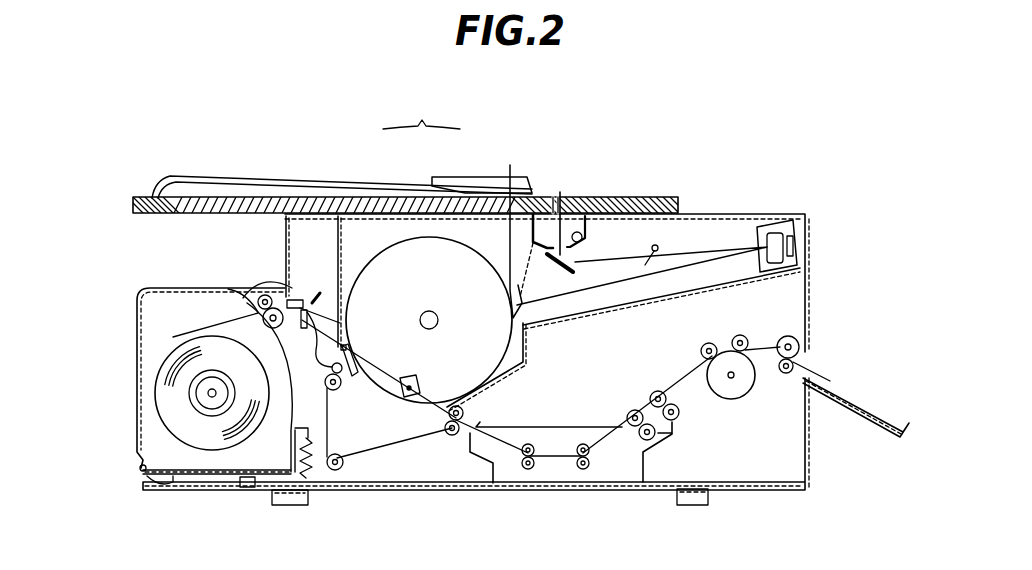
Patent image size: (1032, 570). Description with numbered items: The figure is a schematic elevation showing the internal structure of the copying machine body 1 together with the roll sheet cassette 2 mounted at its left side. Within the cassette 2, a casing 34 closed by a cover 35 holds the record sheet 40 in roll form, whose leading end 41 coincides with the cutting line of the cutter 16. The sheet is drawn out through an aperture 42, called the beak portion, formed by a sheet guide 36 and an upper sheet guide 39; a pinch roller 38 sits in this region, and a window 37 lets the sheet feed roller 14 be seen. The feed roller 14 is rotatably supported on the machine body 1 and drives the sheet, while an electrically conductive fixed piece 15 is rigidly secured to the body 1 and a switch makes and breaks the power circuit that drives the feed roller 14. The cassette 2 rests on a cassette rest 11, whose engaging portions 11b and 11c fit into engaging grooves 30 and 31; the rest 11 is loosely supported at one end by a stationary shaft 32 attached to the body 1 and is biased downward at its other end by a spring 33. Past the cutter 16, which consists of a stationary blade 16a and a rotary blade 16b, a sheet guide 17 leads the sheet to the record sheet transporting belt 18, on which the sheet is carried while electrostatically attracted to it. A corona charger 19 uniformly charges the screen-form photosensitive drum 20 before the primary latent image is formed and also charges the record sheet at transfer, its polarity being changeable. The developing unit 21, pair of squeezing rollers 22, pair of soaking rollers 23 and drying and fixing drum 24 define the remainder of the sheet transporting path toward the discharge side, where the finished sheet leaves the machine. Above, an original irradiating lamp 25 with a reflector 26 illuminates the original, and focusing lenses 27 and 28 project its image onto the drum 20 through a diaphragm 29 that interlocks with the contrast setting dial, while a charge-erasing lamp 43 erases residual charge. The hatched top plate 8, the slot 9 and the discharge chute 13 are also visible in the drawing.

The copying machine body 1 is at (665, 494).
The roll sheet cassette 2 is at (135, 465).
The top plate 8 is at (642, 182).
The slot 9 is at (541, 195).
The cassette rest 11 is at (225, 478).
The engaging portion 11b is at (143, 463).
The engaging portion 11c is at (312, 500).
The discharge chute 13 is at (846, 408).
The sheet feed roller 14 is at (295, 318).
The electrically conductive fixed piece 15 is at (326, 384).
The cutter 16 is at (421, 111).
The stationary blade 16a is at (404, 184).
The rotary blade 16b is at (355, 277).
The sheet guide 17 is at (341, 323).
The record sheet transporting belt 18 is at (398, 405).
The corona charger 19 is at (450, 440).
The photosensitive drum 20 is at (498, 340).
The developing unit 21 is at (557, 488).
The pair of squeezing rollers 22 is at (643, 455).
The pair of soaking rollers 23 is at (680, 420).
The drying and fixing drum 24 is at (745, 388).
The original irradiating lamp 25 is at (578, 231).
The reflector 26 is at (561, 192).
The focusing lens 27 is at (772, 236).
The focusing lens 28 is at (524, 227).
The diaphragm 29 is at (658, 246).
The engaging groove 30 is at (156, 478).
The engaging groove 31 is at (285, 458).
The stationary shaft 32 is at (167, 487).
The casing 34 is at (242, 488).
The spring 33 is at (318, 460).
The cover 35 is at (137, 385).
The sheet guide 36 is at (228, 297).
The window 37 is at (262, 306).
The pinch roller 38 is at (257, 290).
The upper sheet guide 39 is at (298, 299).
The record sheet 40 is at (208, 444).
The leading end 41 is at (310, 305).
The aperture 42 is at (277, 262).
The charge-erasing lamp 43 is at (362, 412).